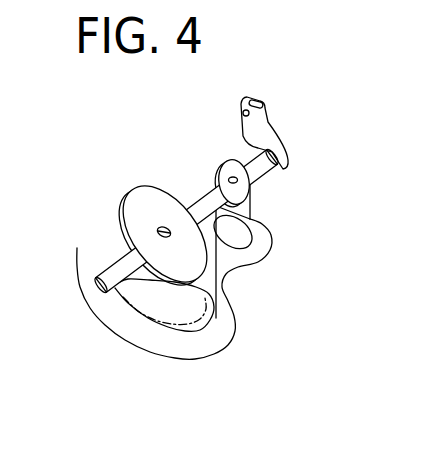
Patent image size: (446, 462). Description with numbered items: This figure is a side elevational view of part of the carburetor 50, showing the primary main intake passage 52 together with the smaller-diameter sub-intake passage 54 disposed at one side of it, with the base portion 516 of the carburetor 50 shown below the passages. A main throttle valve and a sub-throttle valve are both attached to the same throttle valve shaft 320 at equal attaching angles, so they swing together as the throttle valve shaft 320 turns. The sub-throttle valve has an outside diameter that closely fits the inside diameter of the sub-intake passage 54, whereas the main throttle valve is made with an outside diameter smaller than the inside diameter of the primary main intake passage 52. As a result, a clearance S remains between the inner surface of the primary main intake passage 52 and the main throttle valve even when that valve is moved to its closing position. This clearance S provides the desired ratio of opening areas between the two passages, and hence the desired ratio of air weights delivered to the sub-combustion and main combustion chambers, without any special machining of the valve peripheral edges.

The carburetor 50 is at (230, 280).
The primary main intake passage 52 is at (127, 300).
The sub-intake passage 54 is at (238, 233).
The clearance S is at (226, 318).
The base portion 516 is at (178, 340).
The throttle valve shaft 320 is at (116, 266).